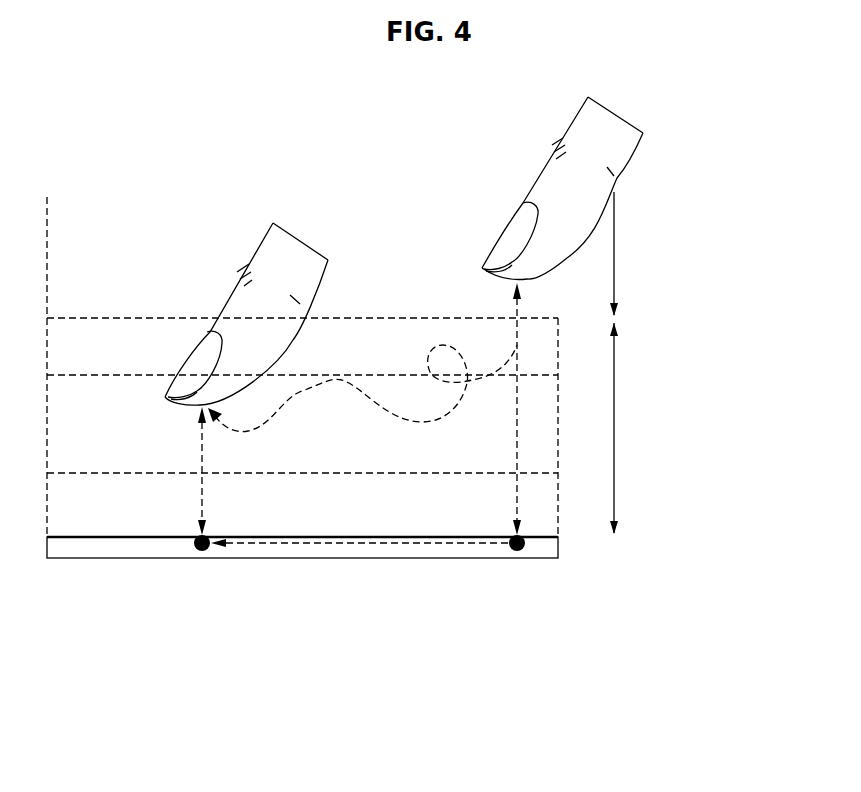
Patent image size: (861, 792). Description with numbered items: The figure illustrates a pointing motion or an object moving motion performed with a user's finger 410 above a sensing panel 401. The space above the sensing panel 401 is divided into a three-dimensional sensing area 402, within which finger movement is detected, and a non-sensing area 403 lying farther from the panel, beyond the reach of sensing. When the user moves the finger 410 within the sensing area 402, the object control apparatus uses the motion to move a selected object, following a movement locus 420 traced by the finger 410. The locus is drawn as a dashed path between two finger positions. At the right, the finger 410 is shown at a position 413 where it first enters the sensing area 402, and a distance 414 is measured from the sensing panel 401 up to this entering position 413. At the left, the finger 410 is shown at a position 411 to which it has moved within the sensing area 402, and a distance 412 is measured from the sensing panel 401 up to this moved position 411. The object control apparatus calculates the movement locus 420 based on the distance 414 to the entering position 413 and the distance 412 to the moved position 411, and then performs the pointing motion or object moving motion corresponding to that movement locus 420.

The sensing panel 401 is at (72, 545).
The 3D sensing area 402 is at (717, 395).
The non-sensing area 403 is at (717, 220).
The finger 410 is at (302, 236).
The position to which the finger is moved 411 is at (200, 597).
The distance from the sensing panel to the moved position 412 is at (173, 448).
The position of the finger at the time of entering the 3D sensing area 413 is at (518, 593).
The distance from the sensing panel to the entering position 414 is at (478, 408).
The movement locus 420 is at (342, 380).